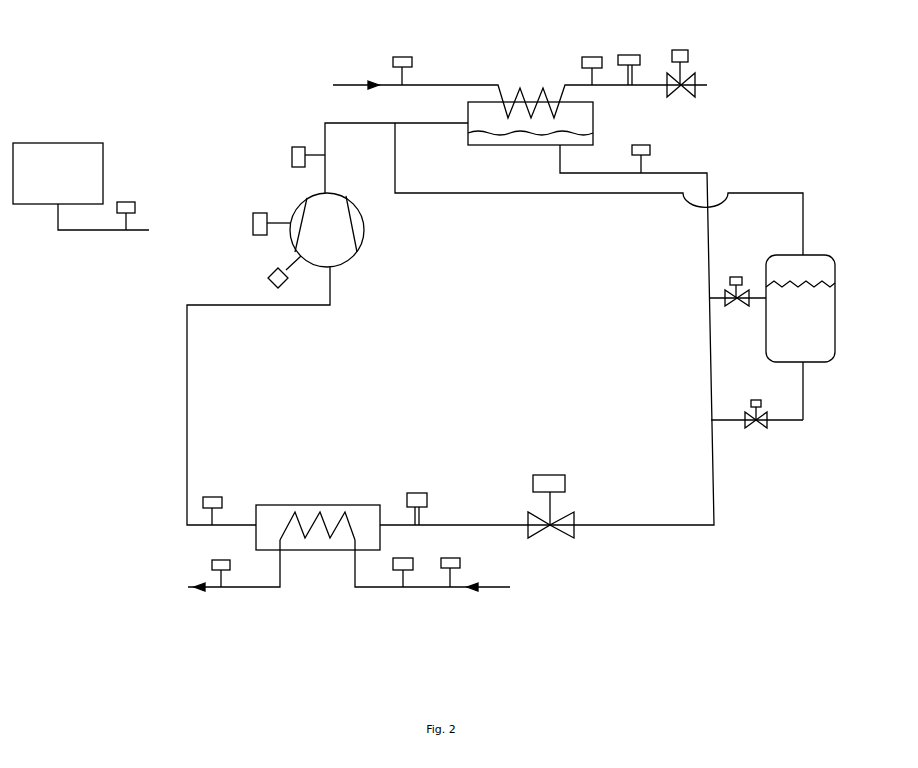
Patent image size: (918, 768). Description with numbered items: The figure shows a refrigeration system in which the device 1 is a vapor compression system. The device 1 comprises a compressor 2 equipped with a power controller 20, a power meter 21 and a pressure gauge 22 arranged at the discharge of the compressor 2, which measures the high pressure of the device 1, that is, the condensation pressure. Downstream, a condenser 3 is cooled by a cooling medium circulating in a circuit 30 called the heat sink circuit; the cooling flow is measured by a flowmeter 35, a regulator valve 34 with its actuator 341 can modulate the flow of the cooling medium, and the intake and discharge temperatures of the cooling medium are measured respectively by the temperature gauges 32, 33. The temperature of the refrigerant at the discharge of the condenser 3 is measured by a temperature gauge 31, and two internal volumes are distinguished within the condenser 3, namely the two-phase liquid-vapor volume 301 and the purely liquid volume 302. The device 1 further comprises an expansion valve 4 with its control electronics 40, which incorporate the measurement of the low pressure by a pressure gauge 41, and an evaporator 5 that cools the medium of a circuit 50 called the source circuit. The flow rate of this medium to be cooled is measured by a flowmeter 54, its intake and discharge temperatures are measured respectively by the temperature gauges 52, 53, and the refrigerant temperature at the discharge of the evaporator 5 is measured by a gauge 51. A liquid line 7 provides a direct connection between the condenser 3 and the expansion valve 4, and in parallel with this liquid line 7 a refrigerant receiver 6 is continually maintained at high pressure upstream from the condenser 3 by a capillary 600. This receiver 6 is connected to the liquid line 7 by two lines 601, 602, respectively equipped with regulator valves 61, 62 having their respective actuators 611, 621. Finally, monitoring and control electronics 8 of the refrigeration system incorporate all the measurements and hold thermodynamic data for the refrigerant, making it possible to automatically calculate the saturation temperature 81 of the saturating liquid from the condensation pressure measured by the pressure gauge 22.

The device 1 is at (214, 92).
The compressor 2 is at (365, 238).
The power controller 20 is at (253, 218).
The power meter 21 is at (270, 272).
The pressure gauge 22 is at (292, 152).
The condenser 3 is at (468, 108).
The circuit 30 is at (352, 84).
The two-phase liquid-vapor volume 301 is at (593, 120).
The purely liquid volume 302 is at (468, 140).
The temperature gauge 31 is at (650, 150).
The temperature gauge 32 is at (393, 58).
The temperature gauge 33 is at (582, 57).
The regulator valve 34 is at (695, 85).
The valve actuator 341 is at (688, 50).
The flowmeter 35 is at (632, 55).
The expansion valve 4 is at (528, 515).
The control electronics 40 is at (555, 475).
The pressure gauge 41 is at (418, 493).
The evaporator 5 is at (295, 505).
The circuit 50 is at (495, 588).
The gauge 51 is at (215, 497).
The temperature gauge 52 is at (400, 558).
The temperature gauge 53 is at (212, 560).
The flowmeter 54 is at (460, 562).
The refrigerant receiver 6 is at (835, 272).
The capillary 600 is at (470, 193).
The line 601 is at (747, 300).
The line 602 is at (735, 418).
The regulator valve 61 is at (725, 295).
The actuator 611 is at (737, 277).
The regulator valve 62 is at (767, 418).
The actuator 621 is at (752, 400).
The liquid line 7 is at (712, 450).
The monitoring and control electronics 8 is at (45, 143).
The saturation temperature 81 is at (135, 203).